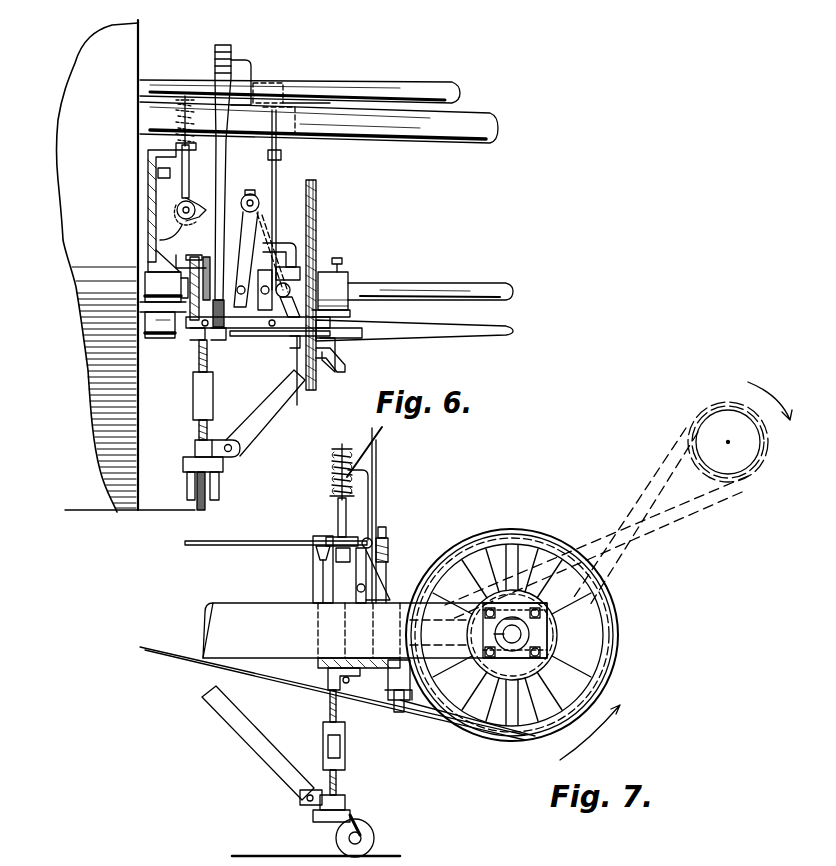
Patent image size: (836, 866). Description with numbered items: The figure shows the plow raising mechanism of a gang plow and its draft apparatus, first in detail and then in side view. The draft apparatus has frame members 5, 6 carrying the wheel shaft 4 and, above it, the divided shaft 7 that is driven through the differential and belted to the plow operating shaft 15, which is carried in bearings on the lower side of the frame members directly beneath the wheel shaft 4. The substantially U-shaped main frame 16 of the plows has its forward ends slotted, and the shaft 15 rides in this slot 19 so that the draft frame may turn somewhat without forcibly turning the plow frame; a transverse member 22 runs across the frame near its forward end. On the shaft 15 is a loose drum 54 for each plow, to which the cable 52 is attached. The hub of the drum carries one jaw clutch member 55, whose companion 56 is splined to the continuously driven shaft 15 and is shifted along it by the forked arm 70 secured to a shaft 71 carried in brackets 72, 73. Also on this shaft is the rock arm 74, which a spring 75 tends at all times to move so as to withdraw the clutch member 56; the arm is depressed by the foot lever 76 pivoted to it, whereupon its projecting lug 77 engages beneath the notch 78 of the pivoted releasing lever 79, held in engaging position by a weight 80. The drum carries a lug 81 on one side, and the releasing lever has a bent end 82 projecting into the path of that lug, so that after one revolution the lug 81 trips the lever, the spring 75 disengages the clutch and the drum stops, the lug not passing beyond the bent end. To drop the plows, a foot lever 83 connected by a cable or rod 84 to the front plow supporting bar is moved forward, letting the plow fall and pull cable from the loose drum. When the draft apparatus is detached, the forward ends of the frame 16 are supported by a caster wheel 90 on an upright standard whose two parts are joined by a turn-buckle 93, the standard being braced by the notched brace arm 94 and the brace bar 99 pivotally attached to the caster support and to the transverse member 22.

In FIG. 6, the shaft 4 is at (447, 128).
In FIG. 6, the frame member 5 is at (148, 204).
In FIG. 6, the frame member 6 is at (190, 322).
In FIG. 6, the shaft 7 is at (380, 87).
In FIG. 7, the plow operating shaft 15 is at (512, 636).
In FIG. 7, the main frame 16 is at (375, 635).
In FIG. 7, the slot 19 is at (458, 705).
In FIG. 6, the transverse member 22 is at (453, 333).
In FIG. 7, the transverse member 22 is at (332, 684).
In FIG. 7, the cable 52 is at (270, 676).
In FIG. 6, the drum 54 is at (318, 232).
In FIG. 7, the drum 54 is at (605, 617).
In FIG. 6, the jaw clutch member 55 is at (280, 338).
In FIG. 6, the clutch member 56 is at (262, 330).
In FIG. 6, the forked arm 70 is at (268, 240).
In FIG. 7, the forked arm 70 is at (382, 580).
In FIG. 6, the shaft 71 is at (249, 192).
In FIG. 7, the bracket 72 is at (313, 574).
In FIG. 6, the bracket 73 is at (270, 243).
In FIG. 7, the bracket 73 is at (356, 586).
In FIG. 6, the rock arm 74 is at (217, 182).
In FIG. 7, the rock arm 74 is at (336, 553).
In FIG. 6, the spring 75 is at (183, 127).
In FIG. 7, the spring 75 is at (336, 470).
In FIG. 6, the foot lever 76 is at (182, 143).
In FIG. 7, the foot lever 76 is at (340, 516).
In FIG. 6, the projecting lug 77 is at (176, 216).
In FIG. 6, the notch 78 is at (176, 236).
In FIG. 6, the releasing lever 79 is at (199, 362).
In FIG. 6, the weight 80 is at (152, 338).
In FIG. 6, the lug 81 is at (297, 405).
In FIG. 7, the lug 81 is at (410, 700).
In FIG. 6, the bent end 82 is at (281, 330).
In FIG. 7, the bent end 82 is at (396, 700).
In FIG. 6, the foot lever 83 is at (282, 146).
In FIG. 7, the foot lever 83 is at (372, 467).
In FIG. 7, the cable or rod 84 is at (268, 548).
In FIG. 6, the caster wheel 90 is at (196, 512).
In FIG. 7, the caster wheel 90 is at (365, 838).
In FIG. 6, the turn-buckle 93 is at (205, 398).
In FIG. 7, the turn-buckle 93 is at (345, 762).
In FIG. 7, the brace arm 94 is at (262, 748).
In FIG. 6, the brace bar 99 is at (258, 428).